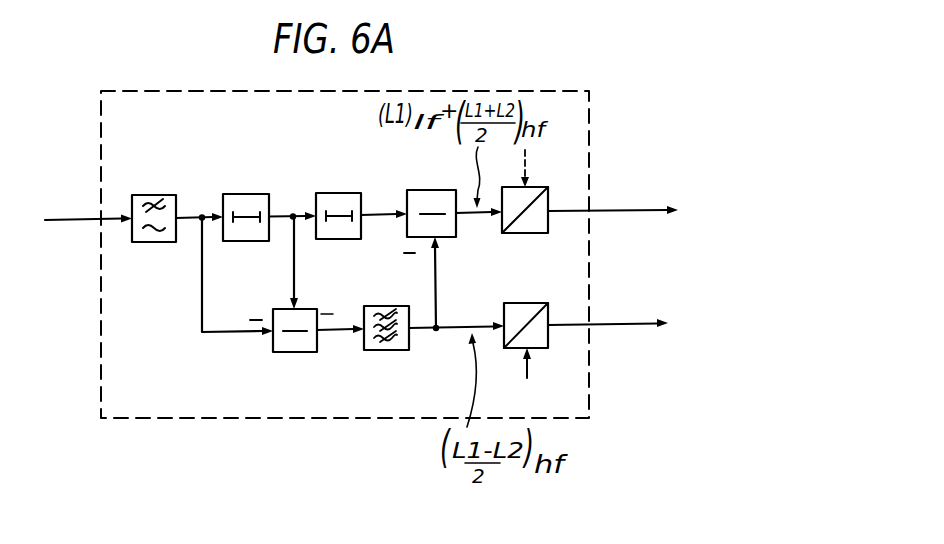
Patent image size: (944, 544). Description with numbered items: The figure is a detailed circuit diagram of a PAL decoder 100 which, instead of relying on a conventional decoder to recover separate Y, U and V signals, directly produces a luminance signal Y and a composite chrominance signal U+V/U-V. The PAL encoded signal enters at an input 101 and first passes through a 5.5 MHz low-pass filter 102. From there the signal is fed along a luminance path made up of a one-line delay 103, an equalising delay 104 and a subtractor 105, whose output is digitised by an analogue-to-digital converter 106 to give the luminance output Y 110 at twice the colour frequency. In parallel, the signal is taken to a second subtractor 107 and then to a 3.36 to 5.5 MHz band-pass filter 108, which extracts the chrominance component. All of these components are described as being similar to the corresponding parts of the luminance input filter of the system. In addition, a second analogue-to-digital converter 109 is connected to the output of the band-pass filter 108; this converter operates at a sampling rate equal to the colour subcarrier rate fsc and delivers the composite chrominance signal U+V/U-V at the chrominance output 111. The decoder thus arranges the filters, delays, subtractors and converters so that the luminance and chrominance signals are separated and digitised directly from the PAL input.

The PAL decoder 100 is at (339, 241).
The input 101 is at (110, 221).
The 5.5 MHz low-pass filter 102 is at (158, 242).
The one-line delay 103 is at (248, 241).
The equalising delay 104 is at (337, 239).
The subtractor 105 is at (436, 190).
The analogue-to-digital converter 106 is at (548, 217).
The second subtractor 107 is at (297, 352).
The 3.36 to 5.5 MHz band-pass filter 108 is at (409, 341).
The second analogue-to-digital converter 109 is at (548, 337).
The luminance output Y at 2fc 110 is at (643, 210).
The chrominance output U+V/U-V at fsc 111 is at (672, 322).